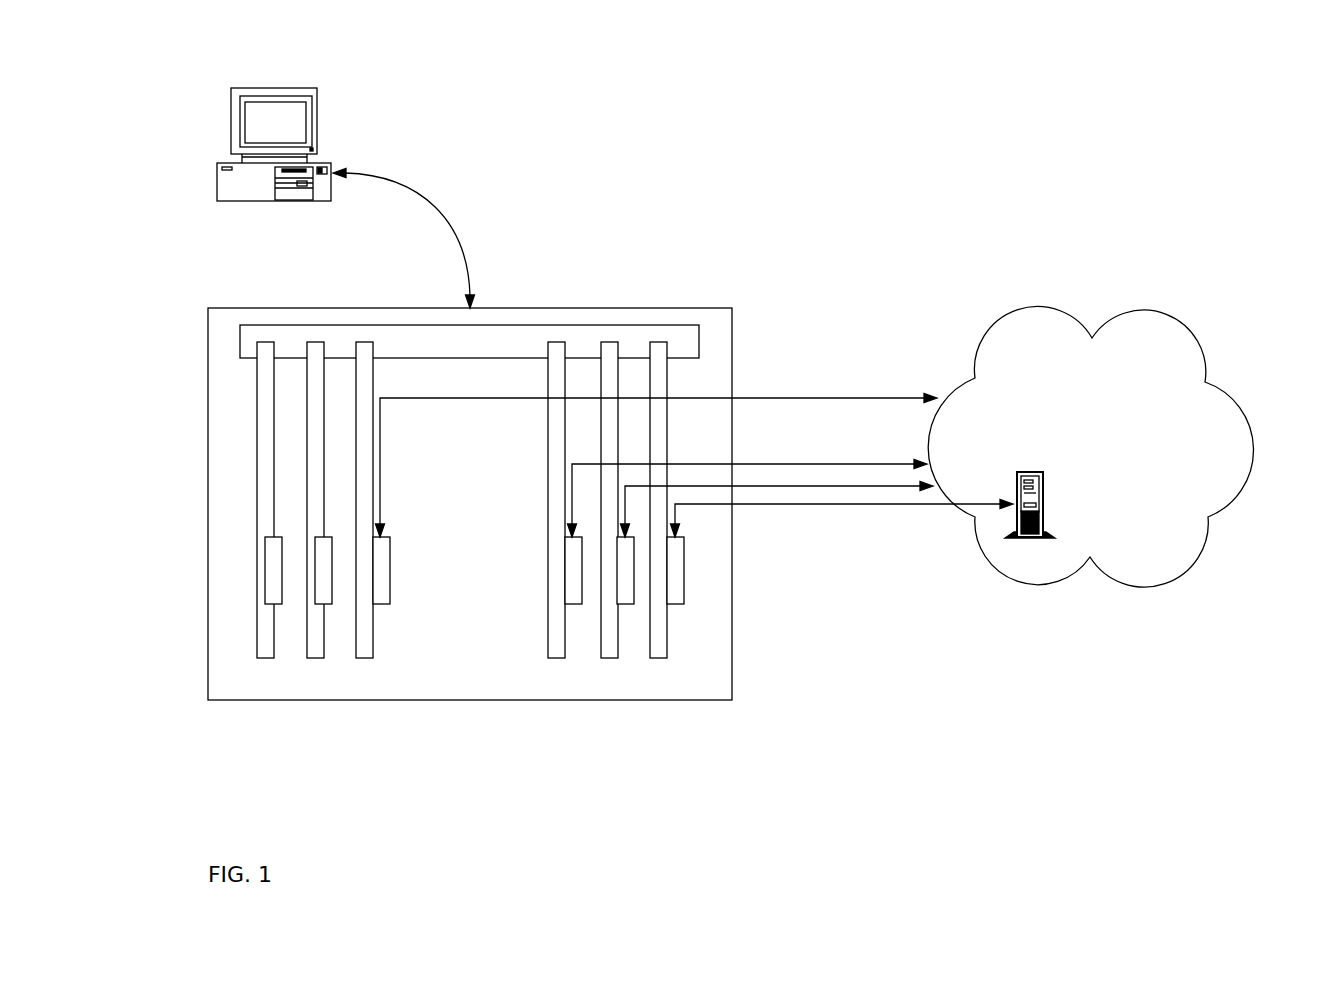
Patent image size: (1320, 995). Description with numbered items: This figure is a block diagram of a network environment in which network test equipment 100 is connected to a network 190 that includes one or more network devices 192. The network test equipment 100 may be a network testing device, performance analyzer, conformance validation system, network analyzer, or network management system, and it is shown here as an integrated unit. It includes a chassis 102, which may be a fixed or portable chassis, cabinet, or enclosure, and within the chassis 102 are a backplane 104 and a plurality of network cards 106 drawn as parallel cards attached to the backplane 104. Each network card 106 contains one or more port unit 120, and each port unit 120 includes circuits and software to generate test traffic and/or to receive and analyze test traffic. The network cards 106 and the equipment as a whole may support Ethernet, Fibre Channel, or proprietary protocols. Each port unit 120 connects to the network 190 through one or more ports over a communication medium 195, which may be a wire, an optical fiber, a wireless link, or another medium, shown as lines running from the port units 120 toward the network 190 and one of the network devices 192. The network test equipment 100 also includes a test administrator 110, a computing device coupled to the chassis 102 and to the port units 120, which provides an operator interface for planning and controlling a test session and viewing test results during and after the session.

The network test equipment 100 is at (674, 102).
The chassis 102 is at (585, 308).
The backplane 104 is at (650, 325).
The network cards 106 is at (678, 712).
The test administrator 110 is at (275, 172).
The port unit 120 is at (668, 604).
The network 190 is at (1090, 446).
The network devices 192 is at (1043, 506).
The communication medium 195 is at (797, 505).